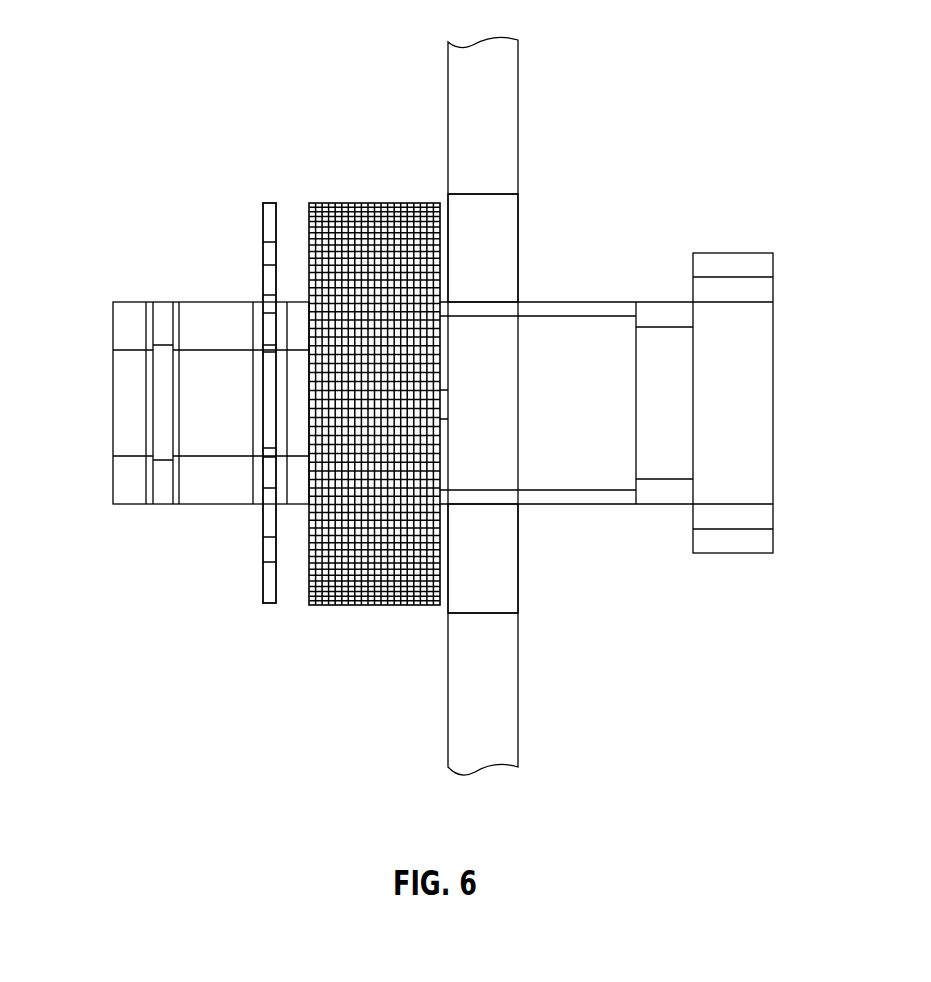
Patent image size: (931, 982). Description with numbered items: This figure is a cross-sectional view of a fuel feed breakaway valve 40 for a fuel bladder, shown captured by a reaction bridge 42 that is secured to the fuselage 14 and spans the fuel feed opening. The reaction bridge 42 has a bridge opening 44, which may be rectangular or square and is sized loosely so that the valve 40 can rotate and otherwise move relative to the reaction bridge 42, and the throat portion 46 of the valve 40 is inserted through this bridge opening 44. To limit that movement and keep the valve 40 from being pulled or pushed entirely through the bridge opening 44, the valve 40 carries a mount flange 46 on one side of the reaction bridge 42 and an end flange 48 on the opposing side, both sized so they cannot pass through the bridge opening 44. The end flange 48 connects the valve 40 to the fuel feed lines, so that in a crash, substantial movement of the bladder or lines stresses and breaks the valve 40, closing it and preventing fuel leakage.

The fuselage 14 is at (265, 253).
The fuel feed breakaway valve 40 is at (127, 407).
The reaction bridge 42 is at (458, 78).
The bridge opening 44 is at (510, 247).
The mount flange 46 is at (385, 206).
The end flange 48 is at (745, 254).